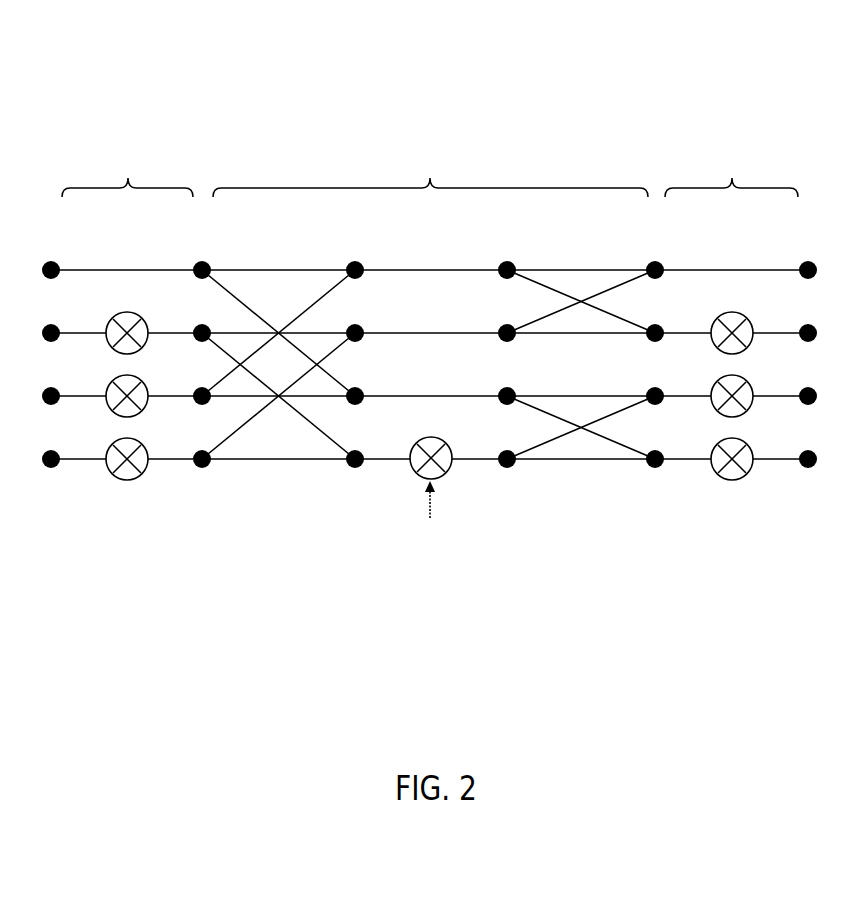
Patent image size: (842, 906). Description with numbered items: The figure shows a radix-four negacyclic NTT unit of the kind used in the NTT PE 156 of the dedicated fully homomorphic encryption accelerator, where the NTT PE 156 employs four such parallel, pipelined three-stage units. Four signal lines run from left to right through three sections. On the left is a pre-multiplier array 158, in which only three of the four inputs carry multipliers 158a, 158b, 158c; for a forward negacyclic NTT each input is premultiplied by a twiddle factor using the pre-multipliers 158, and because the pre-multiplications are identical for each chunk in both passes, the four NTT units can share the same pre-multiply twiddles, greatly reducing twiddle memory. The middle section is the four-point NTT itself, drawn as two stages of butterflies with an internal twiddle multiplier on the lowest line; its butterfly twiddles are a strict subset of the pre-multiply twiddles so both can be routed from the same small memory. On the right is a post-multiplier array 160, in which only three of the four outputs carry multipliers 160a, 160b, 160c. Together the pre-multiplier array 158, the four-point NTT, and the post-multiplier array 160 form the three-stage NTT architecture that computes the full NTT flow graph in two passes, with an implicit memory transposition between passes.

The NTT PE 156 is at (294, 76).
The pre-multiplier array 158 is at (123, 507).
The multiplier 158a is at (110, 321).
The multiplier 158b is at (110, 384).
The multiplier 158c is at (110, 447).
The post-multiplier array 160 is at (737, 500).
The multiplier 160a is at (748, 345).
The multiplier 160b is at (748, 408).
The multiplier 160c is at (748, 471).